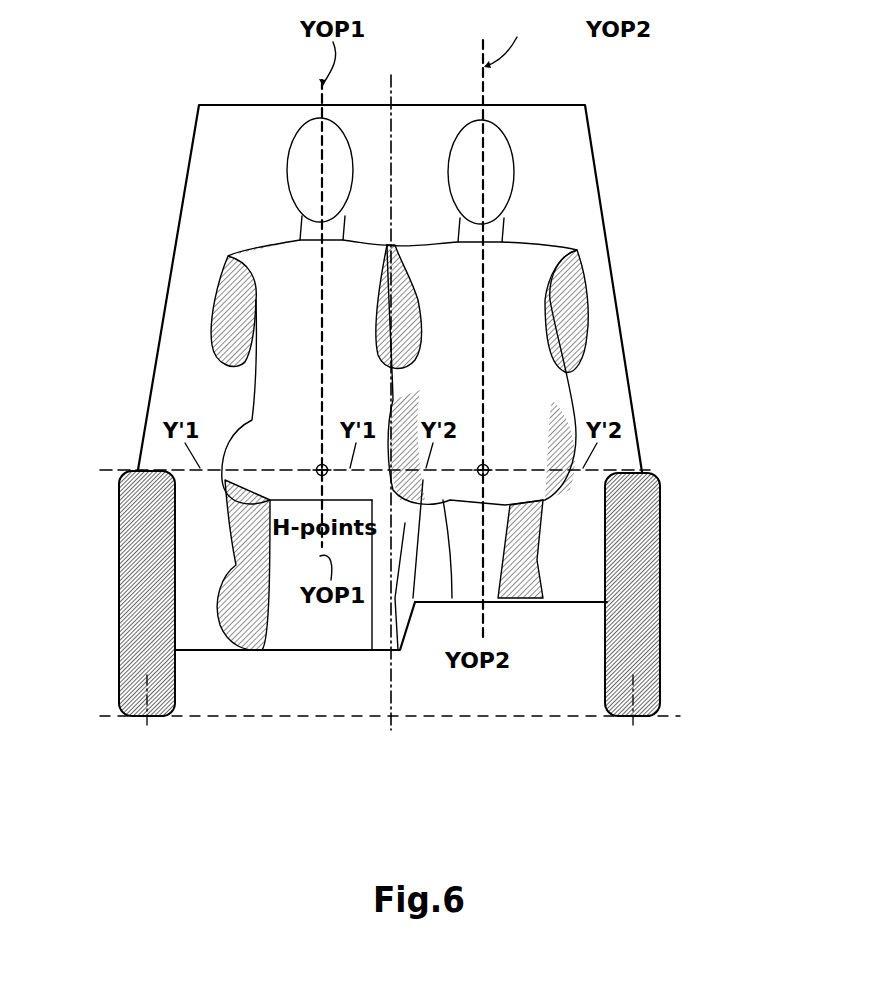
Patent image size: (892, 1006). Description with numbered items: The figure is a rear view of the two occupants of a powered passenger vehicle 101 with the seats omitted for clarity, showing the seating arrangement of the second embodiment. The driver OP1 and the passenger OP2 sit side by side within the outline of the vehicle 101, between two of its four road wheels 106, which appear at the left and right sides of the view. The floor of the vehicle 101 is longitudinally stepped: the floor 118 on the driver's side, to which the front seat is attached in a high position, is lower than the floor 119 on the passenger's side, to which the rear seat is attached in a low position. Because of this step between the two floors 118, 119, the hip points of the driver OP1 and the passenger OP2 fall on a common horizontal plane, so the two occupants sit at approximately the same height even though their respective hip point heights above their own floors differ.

The powered passenger vehicle 101 is at (184, 184).
The road wheels 106 is at (118, 636).
The floor 118 is at (300, 651).
The floor 119 is at (565, 603).
The driver OP1 is at (209, 323).
The passenger OP2 is at (585, 322).